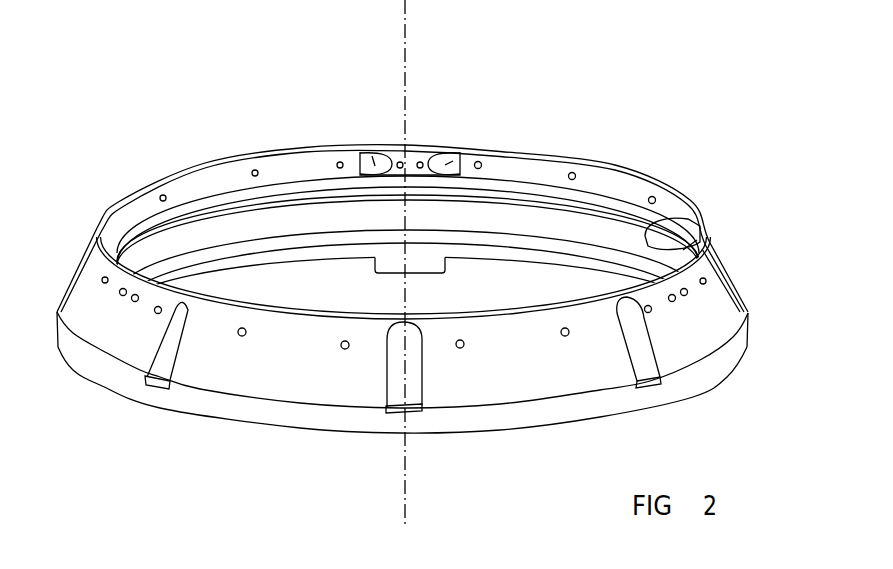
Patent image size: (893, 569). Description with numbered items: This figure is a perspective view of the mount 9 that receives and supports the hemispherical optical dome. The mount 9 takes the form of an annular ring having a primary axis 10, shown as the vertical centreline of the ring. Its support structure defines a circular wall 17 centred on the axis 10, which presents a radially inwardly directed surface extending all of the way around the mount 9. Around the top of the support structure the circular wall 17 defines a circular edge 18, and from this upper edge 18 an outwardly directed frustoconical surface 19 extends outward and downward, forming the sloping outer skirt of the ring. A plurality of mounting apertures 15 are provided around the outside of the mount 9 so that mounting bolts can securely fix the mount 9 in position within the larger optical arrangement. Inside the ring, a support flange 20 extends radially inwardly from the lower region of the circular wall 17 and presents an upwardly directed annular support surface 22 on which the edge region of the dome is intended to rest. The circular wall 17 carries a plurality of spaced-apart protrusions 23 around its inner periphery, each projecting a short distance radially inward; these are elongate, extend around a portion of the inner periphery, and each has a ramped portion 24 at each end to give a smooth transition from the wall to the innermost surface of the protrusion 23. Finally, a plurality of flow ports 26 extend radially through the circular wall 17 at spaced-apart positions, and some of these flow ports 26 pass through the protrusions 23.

The mount 9 is at (728, 190).
The primary axis 10 is at (410, 93).
The mounting apertures 15 is at (153, 360).
The circular wall 17 is at (655, 236).
The circular edge 18 is at (642, 192).
The frustoconical surface 19 is at (707, 310).
The support flange 20 is at (682, 221).
The support surface 22 is at (697, 241).
The protrusions 23 is at (434, 162).
The ramped portion 24 is at (373, 163).
The flow ports 26 is at (398, 161).